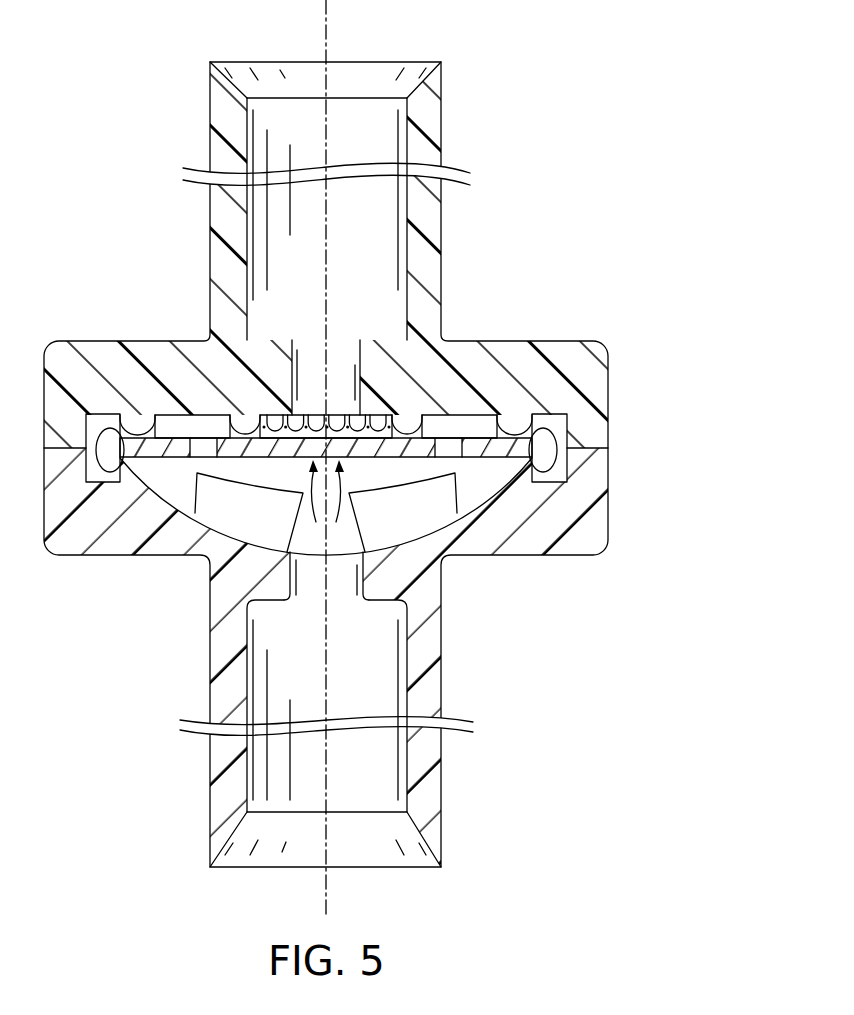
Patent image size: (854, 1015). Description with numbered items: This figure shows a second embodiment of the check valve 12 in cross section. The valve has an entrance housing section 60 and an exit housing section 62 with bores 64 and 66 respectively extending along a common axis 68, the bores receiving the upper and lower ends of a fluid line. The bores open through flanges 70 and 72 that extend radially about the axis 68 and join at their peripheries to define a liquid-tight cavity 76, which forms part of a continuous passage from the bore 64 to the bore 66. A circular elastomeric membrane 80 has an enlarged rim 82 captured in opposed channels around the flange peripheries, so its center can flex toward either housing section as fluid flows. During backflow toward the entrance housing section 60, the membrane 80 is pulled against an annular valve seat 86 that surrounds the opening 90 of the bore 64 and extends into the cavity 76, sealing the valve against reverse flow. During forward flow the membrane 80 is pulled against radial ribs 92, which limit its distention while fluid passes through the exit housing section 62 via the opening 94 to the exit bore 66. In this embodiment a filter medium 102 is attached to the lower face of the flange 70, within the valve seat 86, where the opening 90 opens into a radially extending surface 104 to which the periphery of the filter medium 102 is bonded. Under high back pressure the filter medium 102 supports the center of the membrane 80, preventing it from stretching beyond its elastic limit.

The check valve 12 is at (494, 78).
The entrance housing section 60 is at (441, 130).
The exit housing section 62 is at (441, 790).
The bore 64 is at (407, 108).
The bore 66 is at (250, 783).
The common axis 68 is at (325, 33).
The flange 70 is at (600, 343).
The flange 72 is at (605, 550).
The liquid-tight cavity 76 is at (478, 478).
The elastomeric membrane 80 is at (420, 428).
The enlarged rim 82 is at (556, 430).
The annular valve seat 86 is at (490, 437).
The opening 90 is at (292, 377).
The radial ribs 92 is at (237, 522).
The opening 94 is at (362, 573).
The filter medium 102 is at (336, 415).
The radially extending surface 104 is at (283, 413).